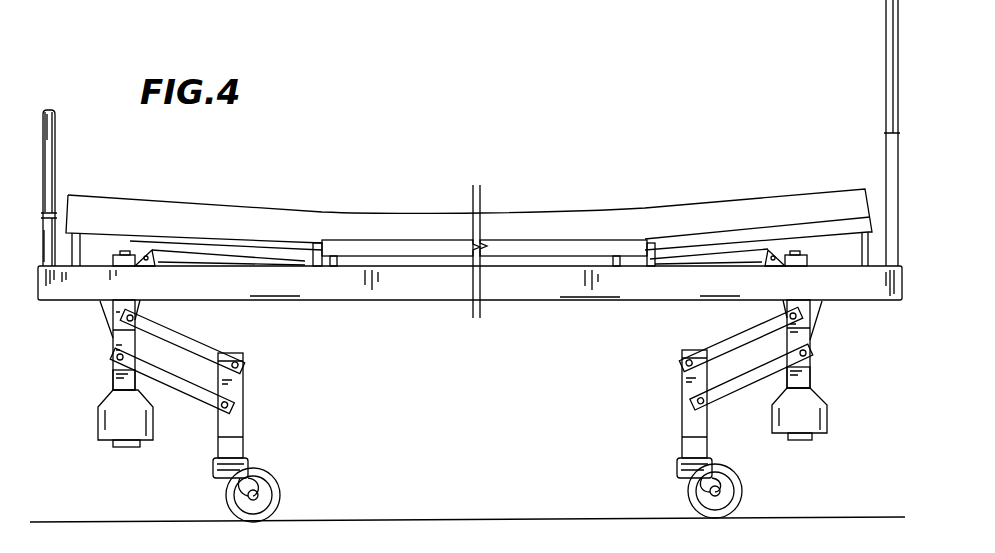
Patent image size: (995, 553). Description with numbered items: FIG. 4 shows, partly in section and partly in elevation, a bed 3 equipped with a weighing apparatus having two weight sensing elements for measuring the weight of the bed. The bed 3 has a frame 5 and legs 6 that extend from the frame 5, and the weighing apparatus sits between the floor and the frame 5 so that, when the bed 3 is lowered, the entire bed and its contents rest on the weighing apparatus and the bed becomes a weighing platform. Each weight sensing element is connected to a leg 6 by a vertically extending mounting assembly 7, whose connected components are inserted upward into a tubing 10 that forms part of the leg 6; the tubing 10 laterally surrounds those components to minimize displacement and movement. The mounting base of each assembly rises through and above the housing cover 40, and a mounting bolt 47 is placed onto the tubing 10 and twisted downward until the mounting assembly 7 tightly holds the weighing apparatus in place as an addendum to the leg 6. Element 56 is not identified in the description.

The bed 3 is at (535, 286).
The frame 5 is at (68, 294).
The leg 6 is at (243, 432).
The mounting assembly 7 is at (113, 380).
The tubing 10 is at (125, 338).
The housing cover 40 is at (97, 425).
The mounting bolt 47 is at (127, 252).
The foot pad 56 is at (125, 447).